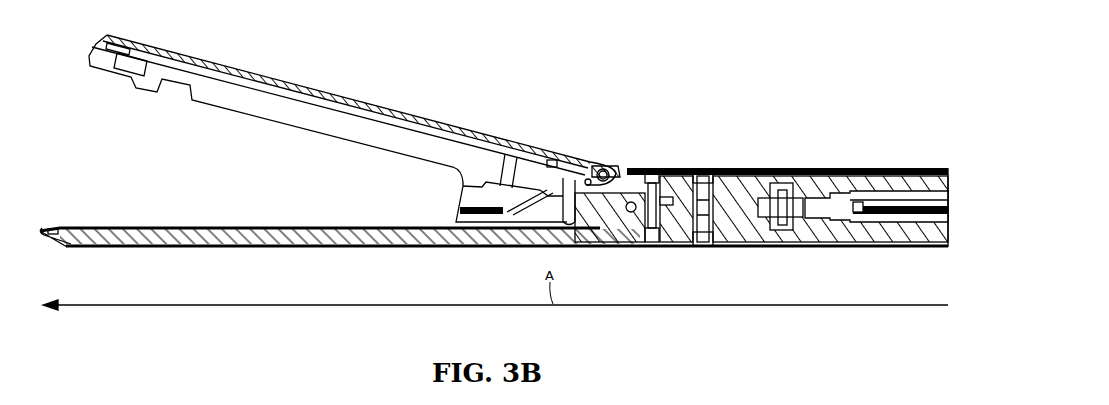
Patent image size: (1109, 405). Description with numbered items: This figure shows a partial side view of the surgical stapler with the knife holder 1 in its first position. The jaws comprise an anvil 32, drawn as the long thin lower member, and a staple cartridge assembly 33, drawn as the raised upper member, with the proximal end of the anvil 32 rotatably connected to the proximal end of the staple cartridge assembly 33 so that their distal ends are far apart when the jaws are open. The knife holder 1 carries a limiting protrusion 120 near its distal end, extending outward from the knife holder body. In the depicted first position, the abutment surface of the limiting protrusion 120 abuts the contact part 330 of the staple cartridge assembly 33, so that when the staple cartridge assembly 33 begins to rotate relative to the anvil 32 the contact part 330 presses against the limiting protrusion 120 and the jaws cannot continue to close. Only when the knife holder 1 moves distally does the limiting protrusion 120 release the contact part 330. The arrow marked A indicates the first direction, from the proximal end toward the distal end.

The staple cartridge assembly 33 is at (411, 111).
The anvil 32 is at (150, 227).
The limiting protrusion 120 is at (567, 160).
The contact part 330 is at (594, 166).
The knife holder 1 is at (607, 171).